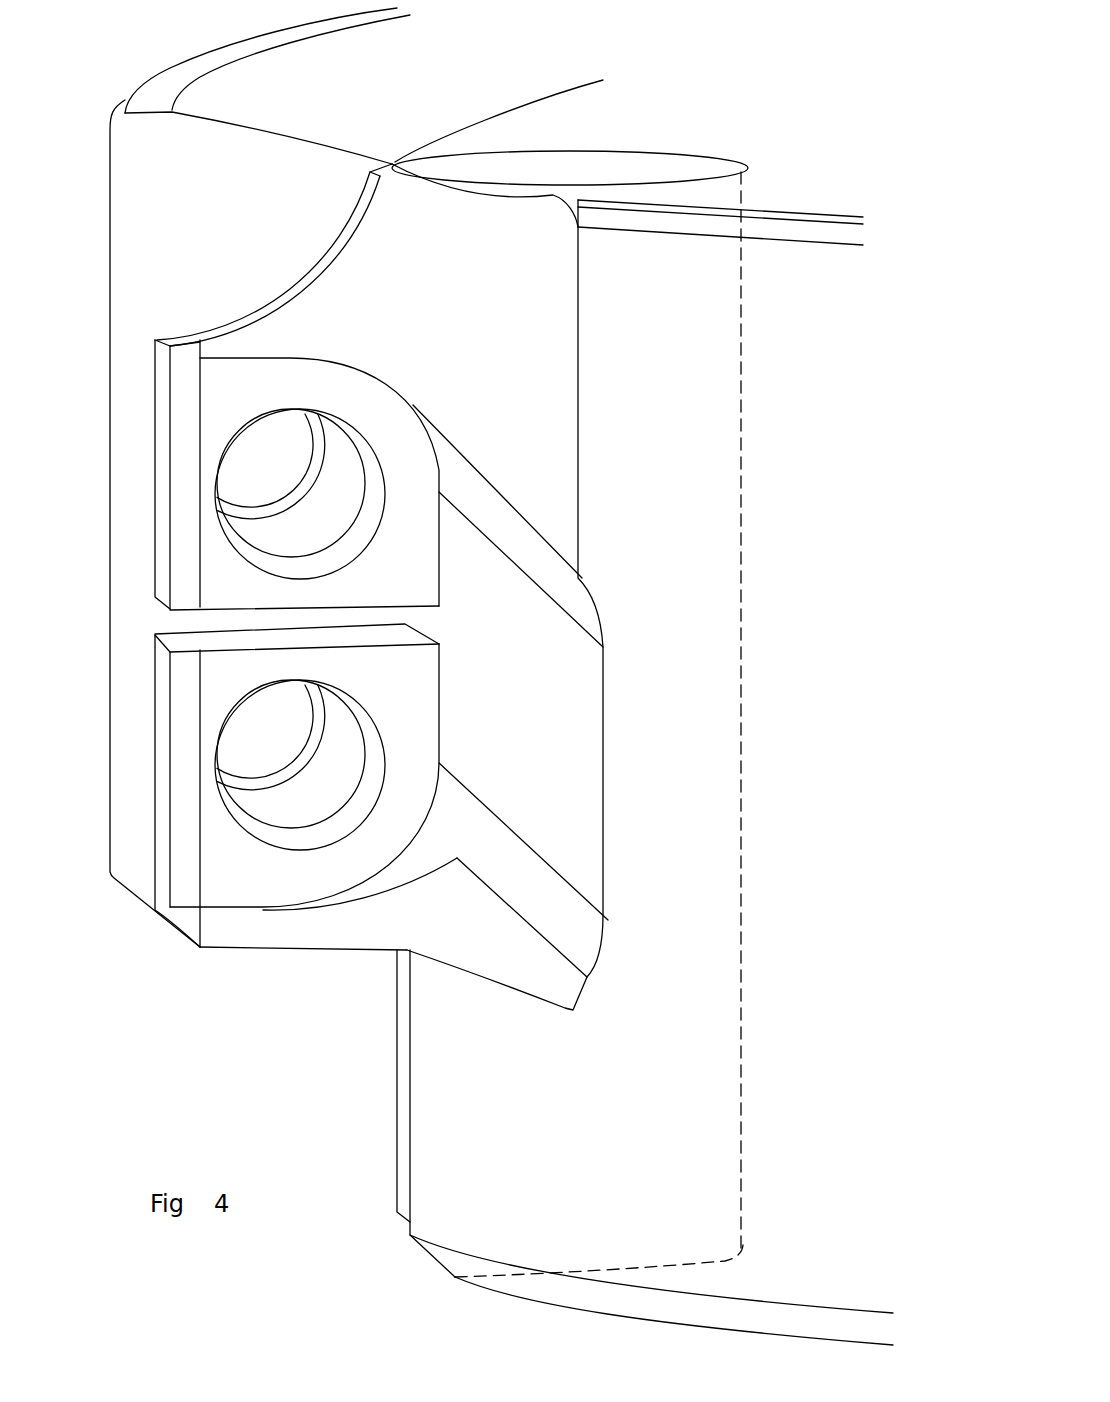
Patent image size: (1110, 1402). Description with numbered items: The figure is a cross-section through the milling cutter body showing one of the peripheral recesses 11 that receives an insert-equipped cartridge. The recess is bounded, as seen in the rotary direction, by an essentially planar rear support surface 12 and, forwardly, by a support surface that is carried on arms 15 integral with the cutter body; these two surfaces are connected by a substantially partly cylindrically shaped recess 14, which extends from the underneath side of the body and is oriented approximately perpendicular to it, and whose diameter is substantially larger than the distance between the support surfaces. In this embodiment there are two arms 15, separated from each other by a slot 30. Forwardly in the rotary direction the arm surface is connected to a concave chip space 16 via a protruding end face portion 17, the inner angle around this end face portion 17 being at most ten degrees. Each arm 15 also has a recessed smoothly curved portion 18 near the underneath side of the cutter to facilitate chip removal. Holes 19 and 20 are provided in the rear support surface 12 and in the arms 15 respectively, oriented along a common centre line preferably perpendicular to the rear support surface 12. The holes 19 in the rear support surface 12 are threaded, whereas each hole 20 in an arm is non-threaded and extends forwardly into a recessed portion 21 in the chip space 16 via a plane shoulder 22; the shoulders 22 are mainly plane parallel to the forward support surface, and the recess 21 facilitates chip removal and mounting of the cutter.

The peripheral recess 11 is at (118, 705).
The rear support surface 12 is at (132, 510).
The partly cylindrical recess 14 is at (742, 1070).
The arm 15 is at (269, 932).
The chip space 16 is at (450, 223).
The end face portion 17 is at (162, 378).
The recessed smoothly curved portion 18 is at (298, 285).
The threaded hole 19 is at (262, 508).
The non-threaded hole 20 is at (353, 530).
The recessed portion 21 is at (555, 818).
The plane shoulder 22 is at (383, 557).
The slot 30 is at (140, 617).